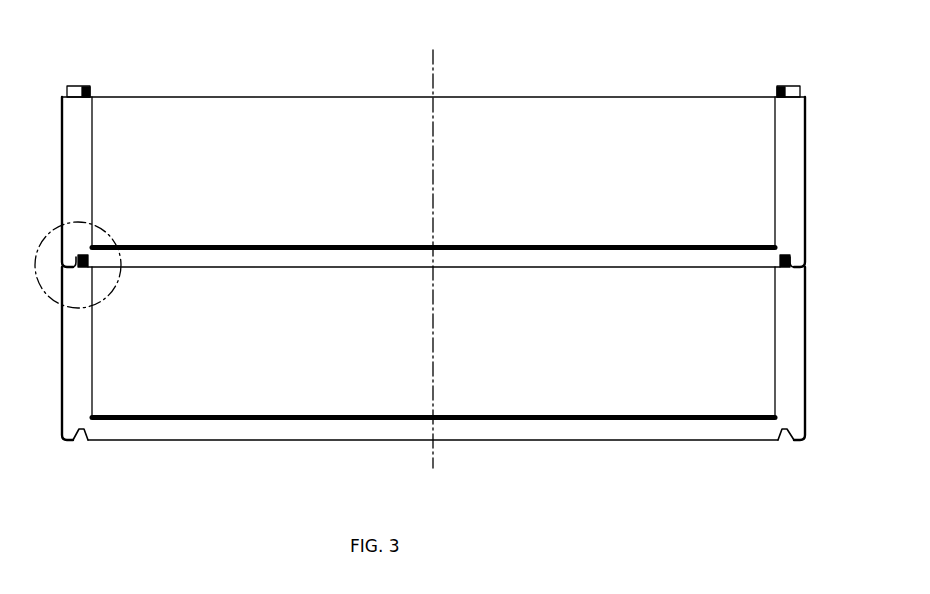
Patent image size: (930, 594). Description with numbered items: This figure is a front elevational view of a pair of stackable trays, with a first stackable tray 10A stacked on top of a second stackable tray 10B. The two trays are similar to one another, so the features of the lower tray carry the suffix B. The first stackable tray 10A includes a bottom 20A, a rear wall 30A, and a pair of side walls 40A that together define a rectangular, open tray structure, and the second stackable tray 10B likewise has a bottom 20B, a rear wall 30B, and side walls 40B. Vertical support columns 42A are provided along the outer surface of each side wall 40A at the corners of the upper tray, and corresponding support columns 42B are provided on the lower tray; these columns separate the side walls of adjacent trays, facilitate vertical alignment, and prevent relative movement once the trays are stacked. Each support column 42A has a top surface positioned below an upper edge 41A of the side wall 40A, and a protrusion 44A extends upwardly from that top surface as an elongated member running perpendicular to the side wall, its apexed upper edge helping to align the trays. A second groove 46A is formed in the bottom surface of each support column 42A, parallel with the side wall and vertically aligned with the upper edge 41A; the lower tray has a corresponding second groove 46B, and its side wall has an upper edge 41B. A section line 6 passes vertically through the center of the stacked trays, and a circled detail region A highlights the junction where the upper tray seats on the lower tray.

The first stackable tray 10A is at (441, 160).
The second stackable tray 10B is at (440, 385).
The bottom 20A is at (548, 245).
The bottom 20B is at (558, 413).
The rear wall 30A is at (328, 181).
The rear wall 30B is at (328, 349).
The side wall 40A is at (93, 148).
The side wall 40B is at (93, 378).
The upper edge 41A is at (88, 88).
The upper edge 41B is at (90, 268).
The vertical support column 42A is at (74, 172).
The vertical support column 42B is at (74, 348).
The protrusion 44A is at (80, 87).
The second groove 46A is at (72, 262).
The second groove 46B is at (80, 432).
The section line 6- 6 is at (433, 50).
The detail region A is at (48, 294).